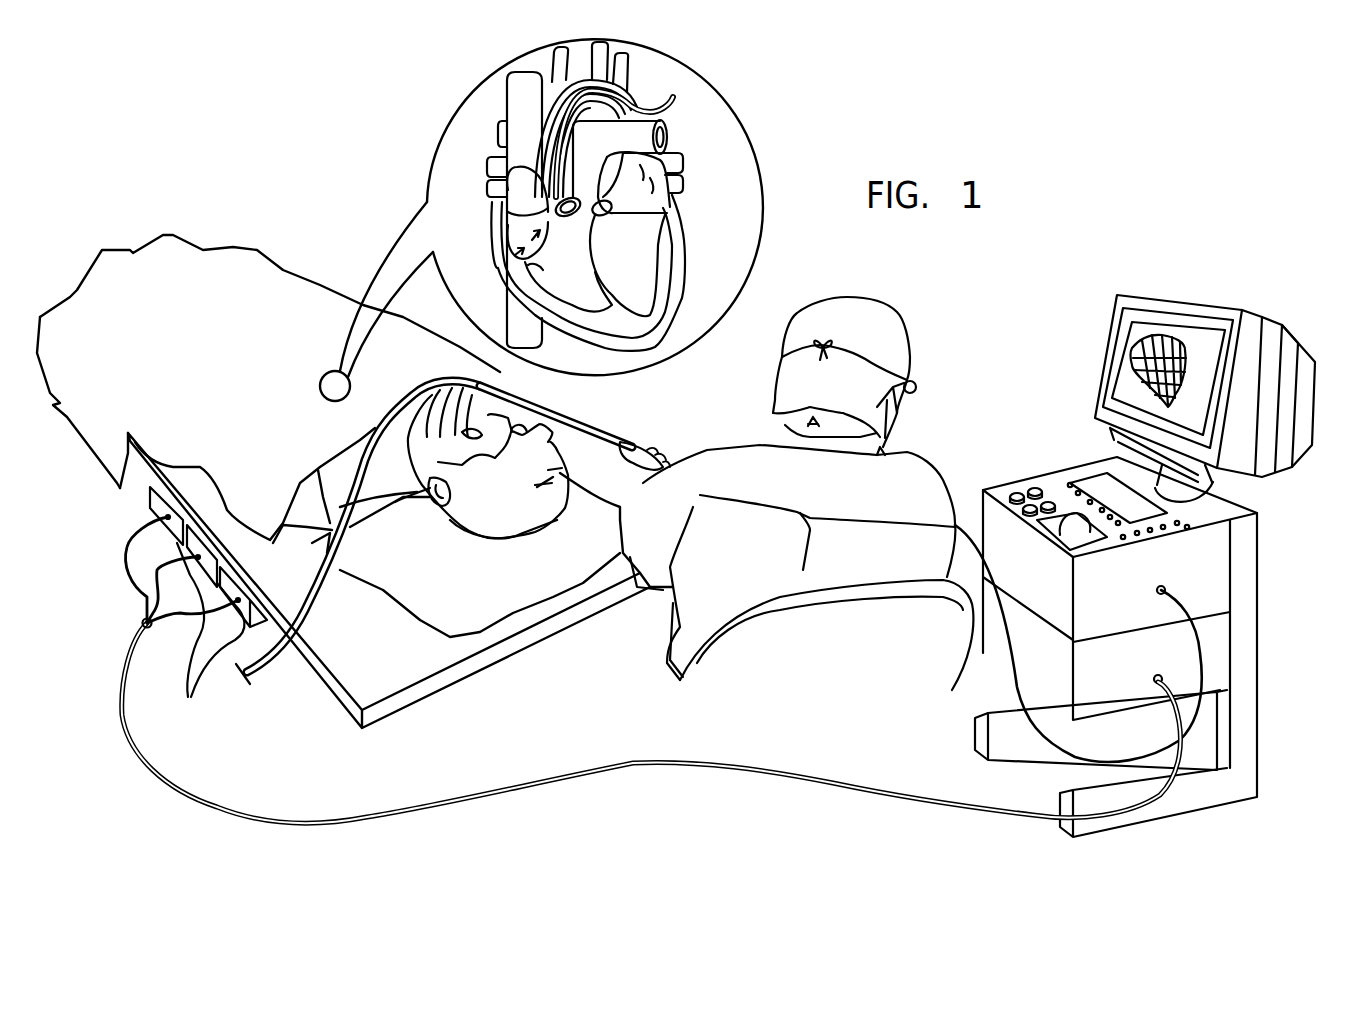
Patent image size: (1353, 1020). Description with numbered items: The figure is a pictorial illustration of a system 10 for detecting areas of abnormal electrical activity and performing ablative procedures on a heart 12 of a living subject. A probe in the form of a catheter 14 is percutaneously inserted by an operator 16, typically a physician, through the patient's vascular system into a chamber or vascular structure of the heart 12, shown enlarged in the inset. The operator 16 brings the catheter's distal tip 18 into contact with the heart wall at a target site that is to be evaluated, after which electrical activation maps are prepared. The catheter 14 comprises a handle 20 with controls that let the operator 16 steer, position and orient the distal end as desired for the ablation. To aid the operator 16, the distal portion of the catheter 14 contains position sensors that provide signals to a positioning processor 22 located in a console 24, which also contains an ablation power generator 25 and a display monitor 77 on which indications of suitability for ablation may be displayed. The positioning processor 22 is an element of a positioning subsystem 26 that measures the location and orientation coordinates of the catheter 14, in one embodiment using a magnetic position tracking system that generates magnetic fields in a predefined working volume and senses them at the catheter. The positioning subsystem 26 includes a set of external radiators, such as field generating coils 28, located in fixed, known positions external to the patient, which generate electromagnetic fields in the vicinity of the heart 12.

The system 10 is at (1100, 191).
The heart 12 is at (668, 293).
The catheter 14 is at (673, 95).
The operator 16 is at (917, 483).
The distal tip 18 is at (633, 213).
The handle 20 is at (622, 446).
The positioning processor 22 is at (1281, 613).
The console 24 is at (1161, 560).
The ablation power generator 25 is at (1217, 552).
The positioning subsystem 26 is at (603, 796).
The field generating coils 28 is at (196, 606).
The display monitor 77 is at (1293, 330).